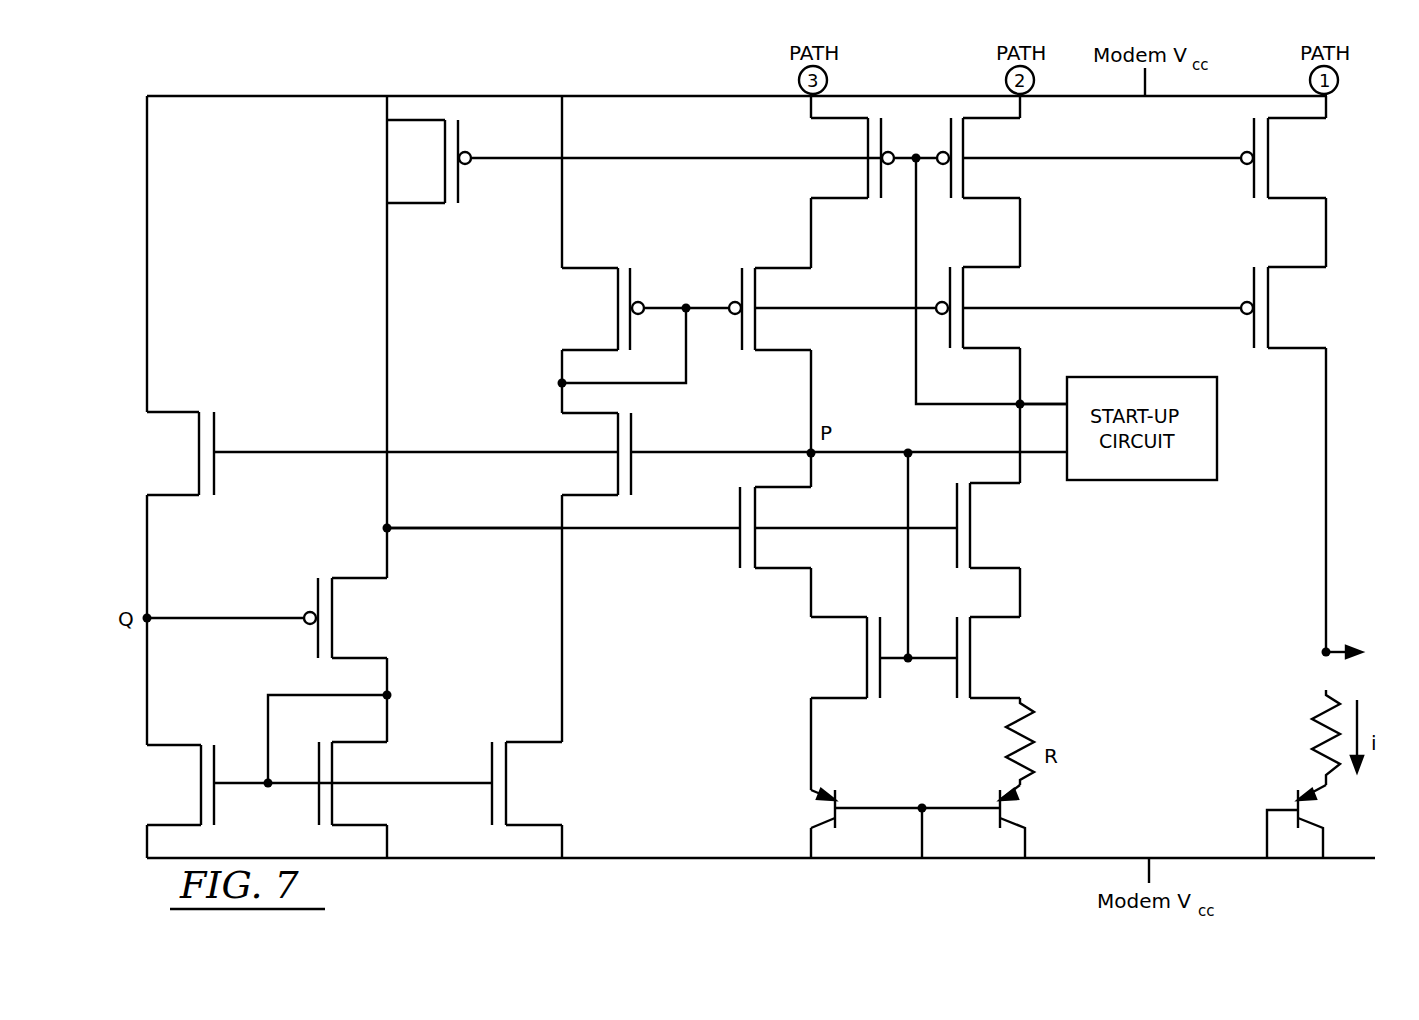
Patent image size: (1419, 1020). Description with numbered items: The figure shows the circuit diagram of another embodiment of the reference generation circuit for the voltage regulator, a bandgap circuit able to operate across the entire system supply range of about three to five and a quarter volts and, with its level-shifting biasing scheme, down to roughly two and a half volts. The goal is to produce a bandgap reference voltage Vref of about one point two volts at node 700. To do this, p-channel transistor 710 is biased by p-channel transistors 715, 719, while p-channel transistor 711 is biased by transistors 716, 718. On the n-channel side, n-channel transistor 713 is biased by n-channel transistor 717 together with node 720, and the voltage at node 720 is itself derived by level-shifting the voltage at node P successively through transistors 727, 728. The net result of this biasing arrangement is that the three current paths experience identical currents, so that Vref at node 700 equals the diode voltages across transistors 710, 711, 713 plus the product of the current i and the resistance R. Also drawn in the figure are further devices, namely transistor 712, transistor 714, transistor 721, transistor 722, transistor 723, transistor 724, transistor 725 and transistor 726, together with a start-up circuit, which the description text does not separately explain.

The node 700 is at (1338, 651).
The p-channel transistor 710 is at (993, 146).
The p-channel transistor 711 is at (1010, 297).
The start-up circuit node 712 is at (1020, 403).
The n-channel transistor 713 is at (980, 536).
The NMOS transistor 714 is at (985, 676).
The p-channel transistor 715 is at (853, 135).
The transistor 716 is at (783, 299).
The n-channel transistor 717 is at (750, 575).
The transistor 718 is at (581, 263).
The p-channel transistor 719 is at (392, 157).
The node 720 is at (387, 527).
The current mirror transistors 721 is at (352, 768).
The bipolar transistor 722 is at (1020, 816).
The bipolar transistor 723 is at (816, 811).
The PMOS transistor 724 is at (1285, 168).
The PMOS transistor 725 is at (1275, 290).
The NMOS transistor 726 is at (642, 436).
The transistor 727 is at (220, 435).
The transistor 728 is at (345, 626).